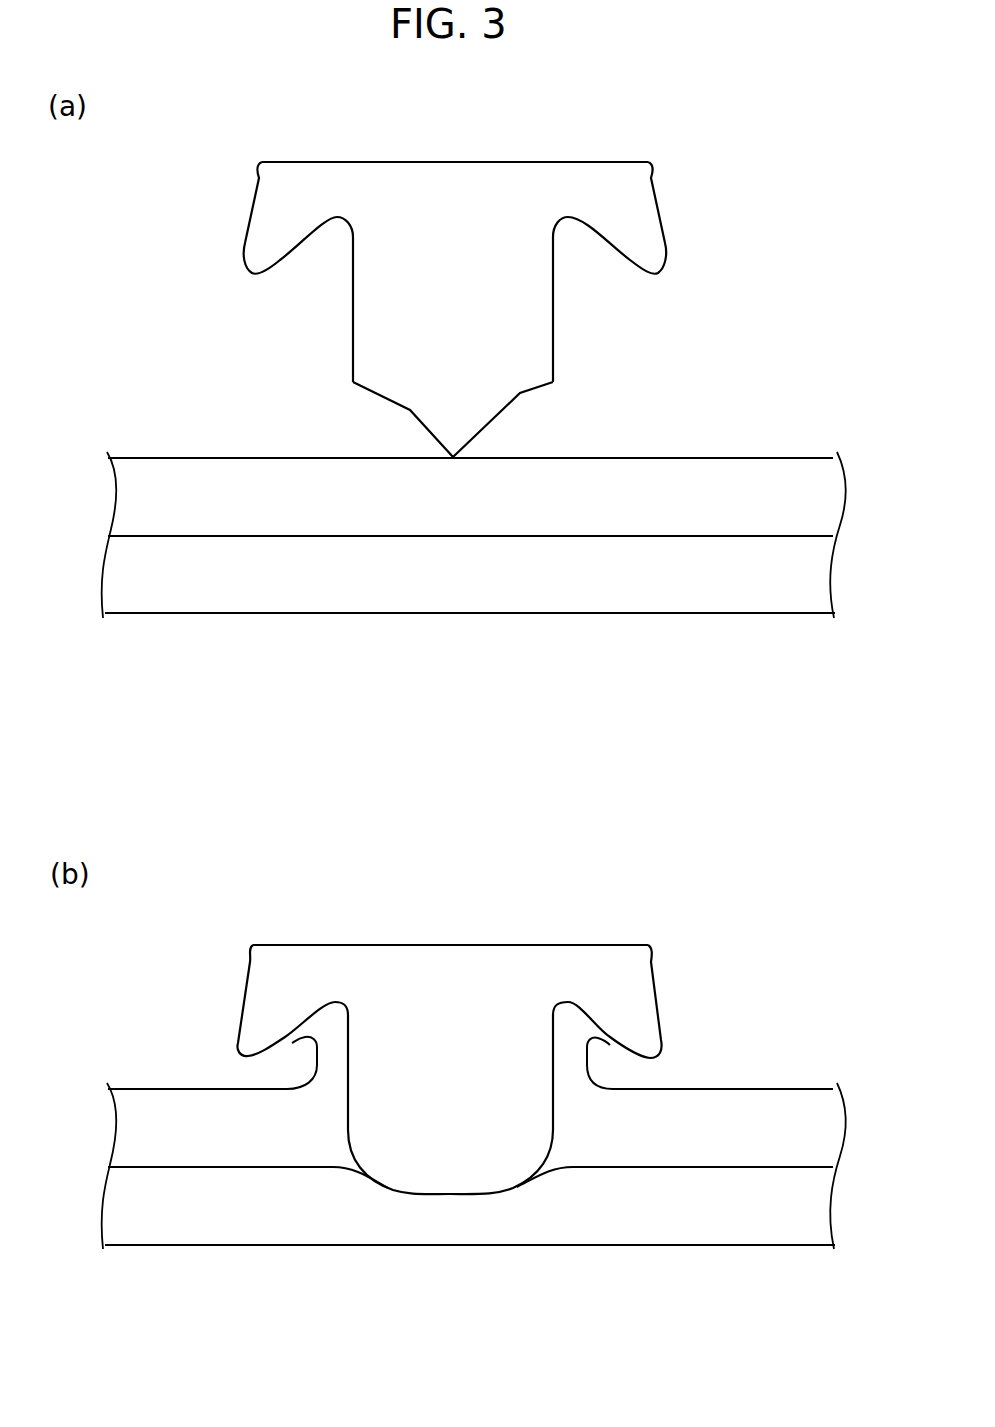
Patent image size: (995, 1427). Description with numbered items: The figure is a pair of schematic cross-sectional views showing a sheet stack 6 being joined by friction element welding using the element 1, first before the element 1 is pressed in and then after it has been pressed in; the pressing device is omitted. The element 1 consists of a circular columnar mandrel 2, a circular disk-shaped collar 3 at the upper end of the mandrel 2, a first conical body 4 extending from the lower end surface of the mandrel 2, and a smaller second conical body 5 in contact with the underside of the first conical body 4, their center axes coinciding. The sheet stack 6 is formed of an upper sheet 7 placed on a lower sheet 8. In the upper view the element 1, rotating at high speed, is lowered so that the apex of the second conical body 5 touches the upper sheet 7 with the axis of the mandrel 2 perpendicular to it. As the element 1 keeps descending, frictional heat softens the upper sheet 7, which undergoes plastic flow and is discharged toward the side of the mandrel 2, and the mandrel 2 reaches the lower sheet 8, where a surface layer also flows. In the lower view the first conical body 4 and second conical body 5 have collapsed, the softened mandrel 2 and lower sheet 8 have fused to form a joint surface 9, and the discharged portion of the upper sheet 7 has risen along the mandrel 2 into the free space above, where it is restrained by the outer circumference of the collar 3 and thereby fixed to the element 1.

The element 1 is at (547, 142).
The mandrel 2 is at (360, 328).
The collar 3 is at (257, 238).
The first conical body 4 is at (520, 392).
The second conical body 5 is at (453, 438).
The sheet stack 6 is at (553, 629).
The upper sheet 7 is at (720, 468).
The lower sheet 8 is at (686, 607).
The joint surface 9 is at (420, 1196).